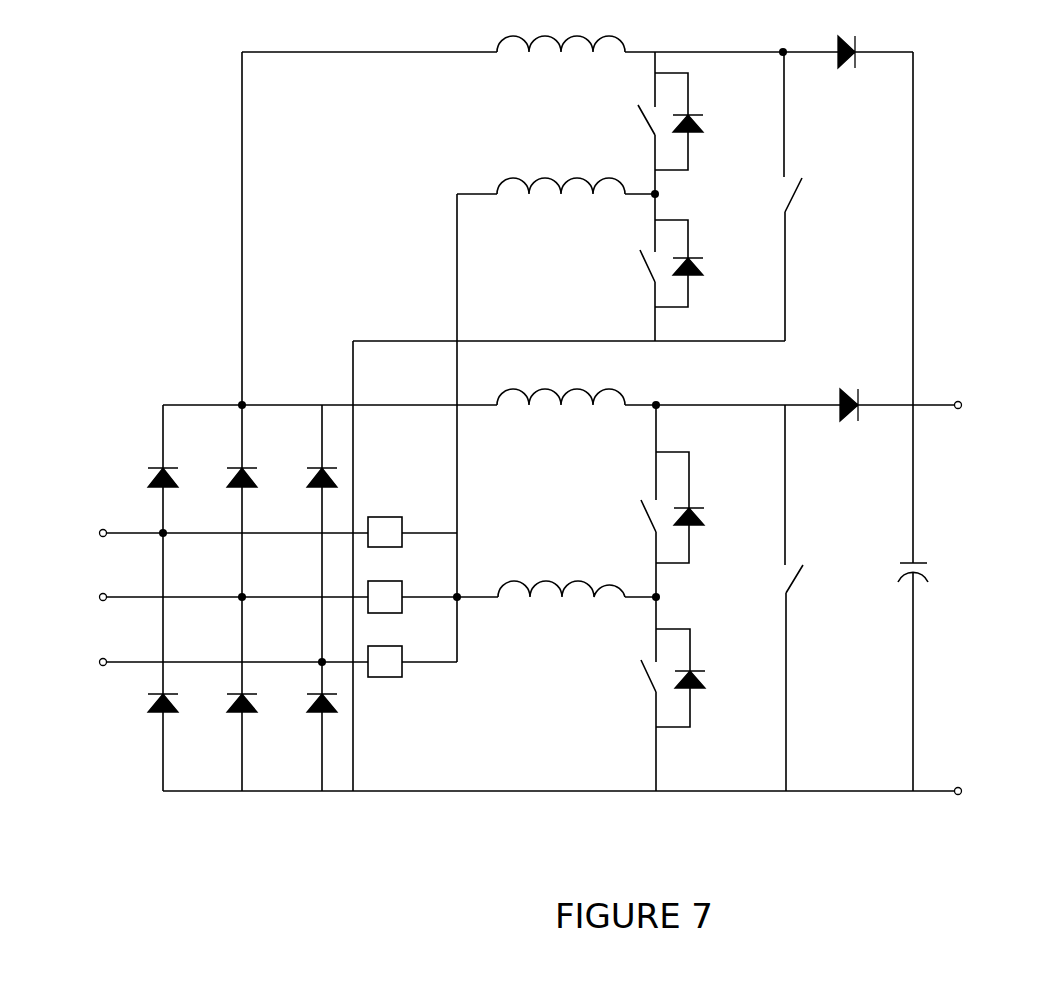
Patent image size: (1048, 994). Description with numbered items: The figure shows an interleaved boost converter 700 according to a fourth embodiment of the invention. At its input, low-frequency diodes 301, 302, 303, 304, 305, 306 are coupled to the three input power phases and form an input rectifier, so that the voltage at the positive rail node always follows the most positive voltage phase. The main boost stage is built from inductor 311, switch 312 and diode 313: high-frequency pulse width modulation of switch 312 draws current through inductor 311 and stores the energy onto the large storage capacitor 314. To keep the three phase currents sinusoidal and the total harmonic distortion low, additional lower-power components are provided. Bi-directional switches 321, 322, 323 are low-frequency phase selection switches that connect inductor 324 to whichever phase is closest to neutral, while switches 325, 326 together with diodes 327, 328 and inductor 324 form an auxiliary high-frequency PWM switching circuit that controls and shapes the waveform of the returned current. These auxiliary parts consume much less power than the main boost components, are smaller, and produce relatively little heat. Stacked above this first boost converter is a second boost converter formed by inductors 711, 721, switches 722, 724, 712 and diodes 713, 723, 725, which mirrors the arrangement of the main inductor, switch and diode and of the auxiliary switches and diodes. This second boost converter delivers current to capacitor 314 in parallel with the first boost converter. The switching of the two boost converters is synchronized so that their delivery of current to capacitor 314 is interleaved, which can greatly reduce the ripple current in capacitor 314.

The interleaved boost converter 700 is at (243, 857).
The inductor 711 is at (528, 56).
The inductor 721 is at (514, 178).
The inductor 311 is at (517, 385).
The inductor 324 is at (546, 581).
The switch 722 is at (637, 106).
The switch 724 is at (638, 251).
The switch 325 is at (639, 500).
The switch 326 is at (639, 662).
The switch 712 is at (803, 178).
The switch 312 is at (803, 565).
The diode 723 is at (704, 128).
The diode 725 is at (704, 275).
The diode 327 is at (703, 505).
The diode 328 is at (706, 665).
The diode 713 is at (838, 70).
The diode 313 is at (840, 423).
The storage capacitor 314 is at (930, 563).
The low-frequency diode 301 is at (178, 488).
The low-frequency diode 302 is at (258, 488).
The low-frequency diode 303 is at (306, 466).
The low-frequency diode 304 is at (178, 714).
The low-frequency diode 305 is at (258, 714).
The low-frequency diode 306 is at (305, 694).
The bi-directional switch 321 is at (392, 516).
The bi-directional switch 322 is at (404, 580).
The bi-directional switch 323 is at (392, 678).